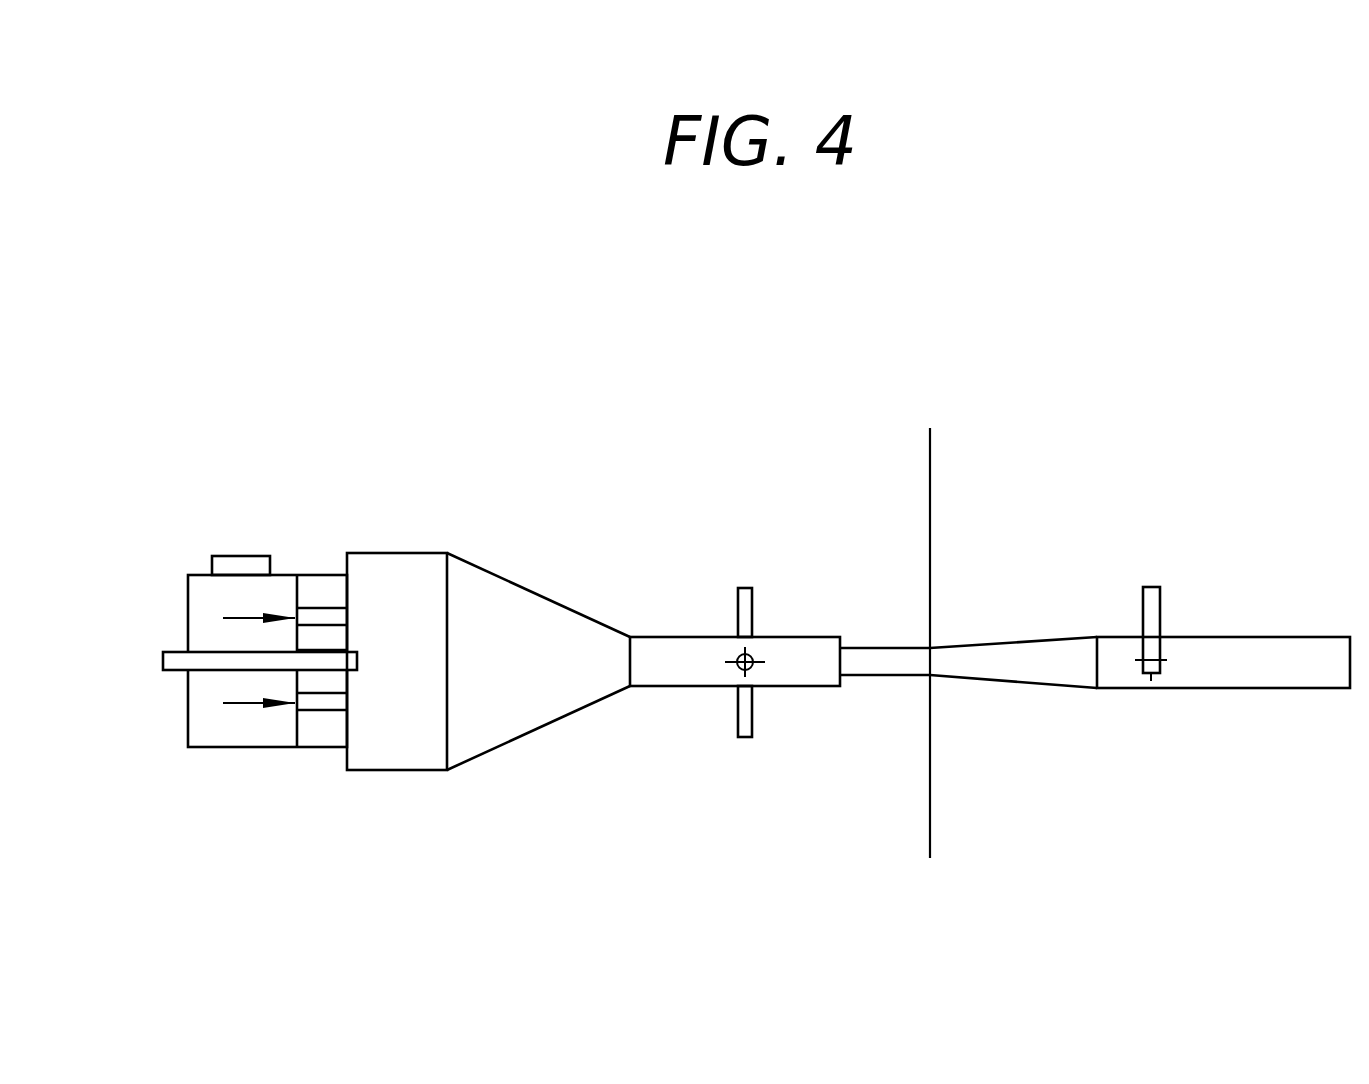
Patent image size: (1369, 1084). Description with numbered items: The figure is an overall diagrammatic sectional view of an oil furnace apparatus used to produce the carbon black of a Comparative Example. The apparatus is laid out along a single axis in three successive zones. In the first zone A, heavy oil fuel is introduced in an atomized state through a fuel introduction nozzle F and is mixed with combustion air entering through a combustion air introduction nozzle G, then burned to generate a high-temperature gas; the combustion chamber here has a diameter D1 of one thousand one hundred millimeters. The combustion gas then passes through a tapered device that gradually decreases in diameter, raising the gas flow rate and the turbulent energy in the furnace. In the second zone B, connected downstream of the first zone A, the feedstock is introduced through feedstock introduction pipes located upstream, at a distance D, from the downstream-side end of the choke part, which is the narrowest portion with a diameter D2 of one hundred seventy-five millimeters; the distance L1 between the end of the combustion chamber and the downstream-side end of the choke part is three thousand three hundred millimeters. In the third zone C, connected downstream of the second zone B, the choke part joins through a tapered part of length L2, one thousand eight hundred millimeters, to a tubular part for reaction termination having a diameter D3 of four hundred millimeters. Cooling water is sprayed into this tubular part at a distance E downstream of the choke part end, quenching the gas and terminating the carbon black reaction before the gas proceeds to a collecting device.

The first zone A is at (447, 553).
The second zone B is at (930, 438).
The third zone C is at (1352, 438).
The distance D is at (747, 582).
The distance E is at (1150, 587).
The fuel introduction nozzle F is at (160, 660).
The combustion air introduction nozzle G is at (242, 554).
The diameter of combustion chamber D1 is at (392, 553).
The diameter of choke part D2 is at (897, 757).
The diameter of tubular part for reaction termination D3 is at (1218, 770).
The distance between end of combustion chamber and downstream-side end of choke part L1 is at (348, 775).
The length of tapered part L2 is at (1097, 688).